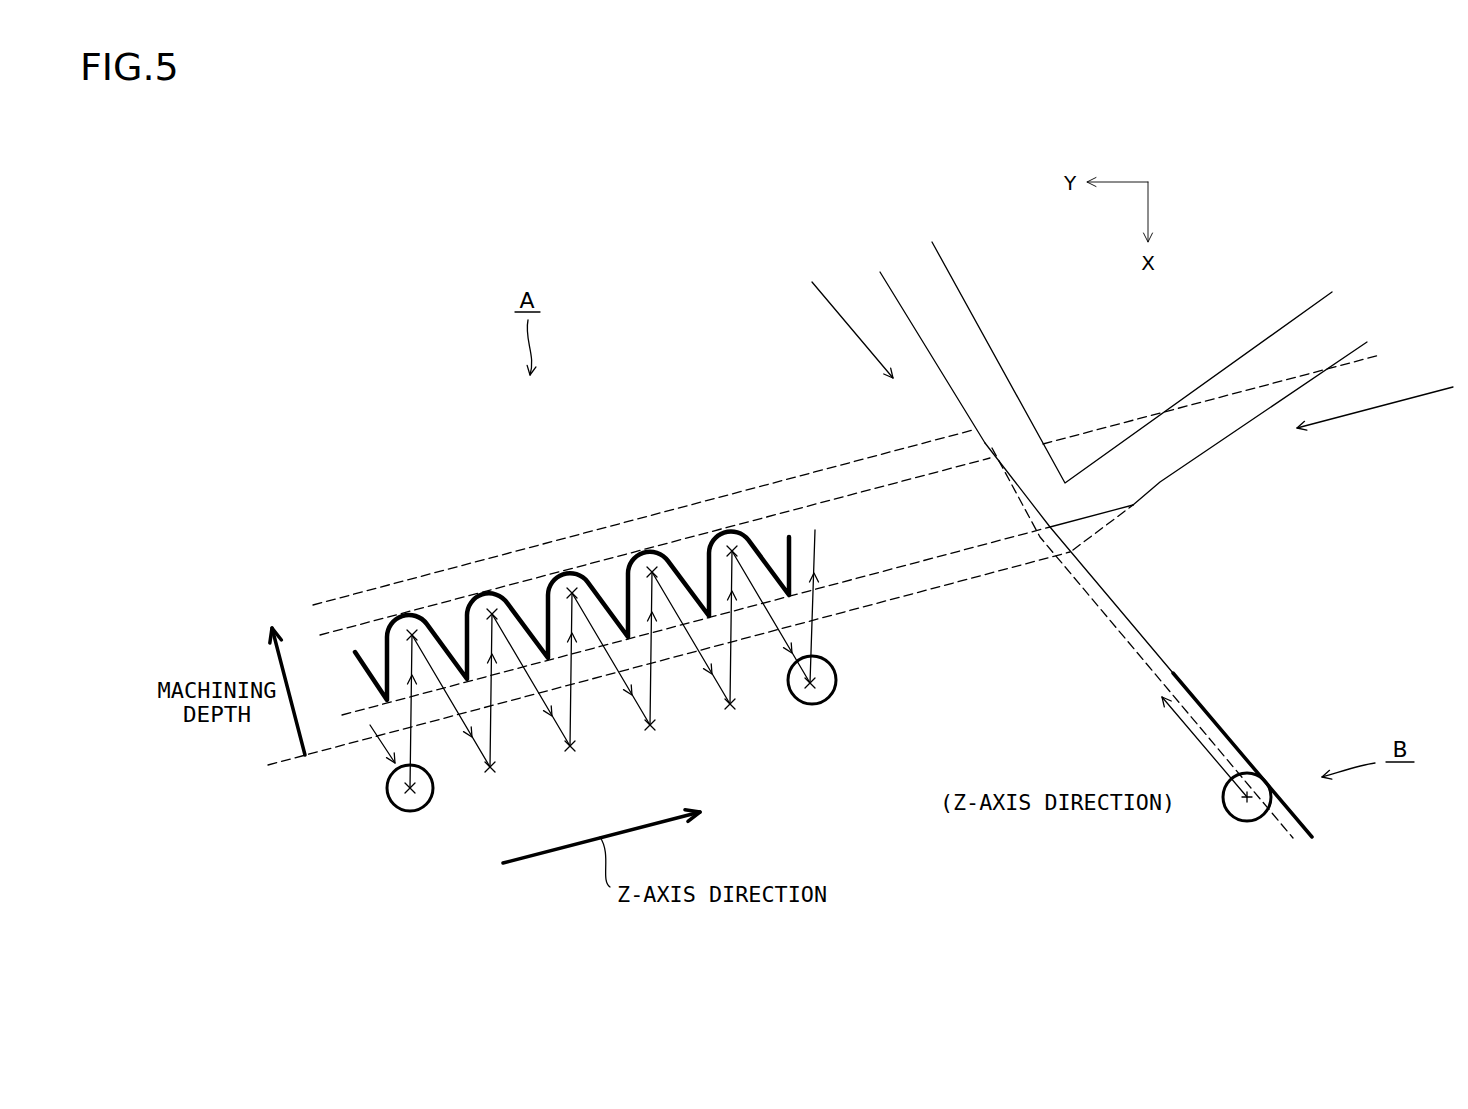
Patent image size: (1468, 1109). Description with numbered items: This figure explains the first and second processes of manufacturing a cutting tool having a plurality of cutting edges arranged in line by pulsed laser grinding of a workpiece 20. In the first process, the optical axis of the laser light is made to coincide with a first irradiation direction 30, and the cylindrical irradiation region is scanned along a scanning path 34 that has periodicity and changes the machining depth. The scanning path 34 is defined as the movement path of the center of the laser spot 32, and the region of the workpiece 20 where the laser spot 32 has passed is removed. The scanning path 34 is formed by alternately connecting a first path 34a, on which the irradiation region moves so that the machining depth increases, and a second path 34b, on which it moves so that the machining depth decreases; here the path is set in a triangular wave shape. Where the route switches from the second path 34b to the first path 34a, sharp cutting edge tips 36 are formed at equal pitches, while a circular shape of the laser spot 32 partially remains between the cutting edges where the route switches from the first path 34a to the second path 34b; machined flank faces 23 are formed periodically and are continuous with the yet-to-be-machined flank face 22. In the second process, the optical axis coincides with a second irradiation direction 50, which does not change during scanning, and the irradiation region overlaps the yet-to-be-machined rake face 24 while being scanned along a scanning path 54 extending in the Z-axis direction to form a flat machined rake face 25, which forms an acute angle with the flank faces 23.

The workpiece 20 is at (1213, 275).
The yet-to-be-machined flank face 22 is at (1212, 450).
The machined flank face 23 is at (1100, 517).
The yet-to-be-machined rake face 24 is at (887, 288).
The machined rake face 25 is at (1007, 477).
The first irradiation direction 30 is at (1388, 407).
The laser spot 32 is at (394, 804).
The scanning path 34 is at (377, 743).
The first path 34a is at (408, 738).
The second path 34b is at (457, 720).
The cutting edge tip 36 is at (387, 700).
The second irradiation direction 50 is at (832, 307).
The scanning path 54 is at (1190, 737).